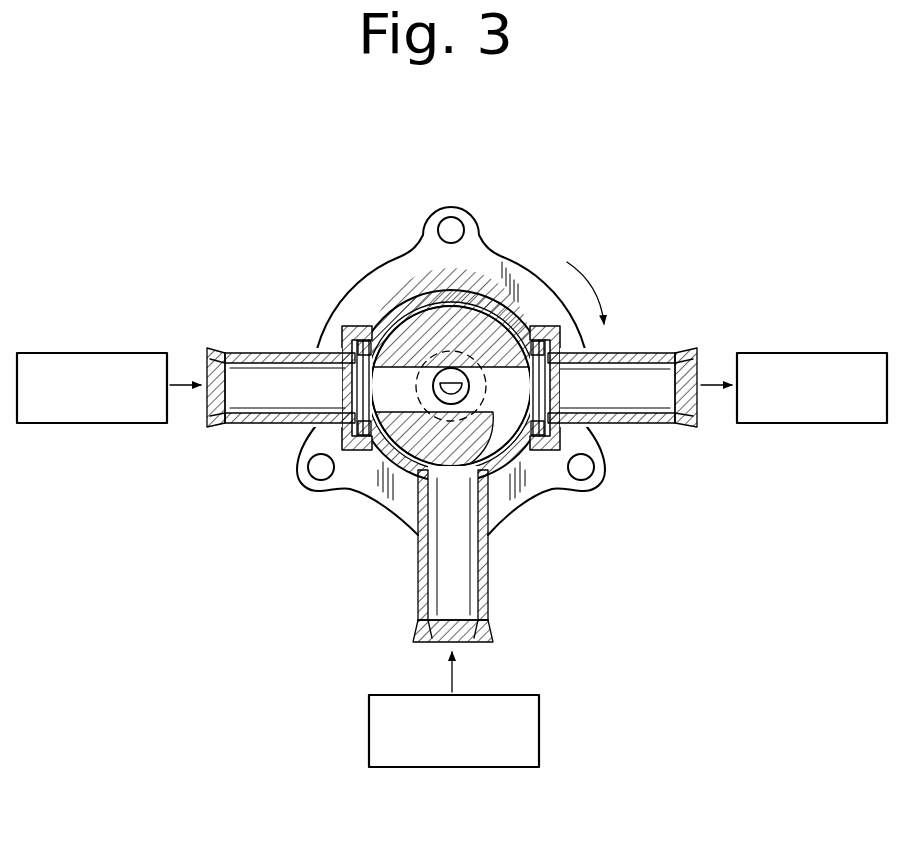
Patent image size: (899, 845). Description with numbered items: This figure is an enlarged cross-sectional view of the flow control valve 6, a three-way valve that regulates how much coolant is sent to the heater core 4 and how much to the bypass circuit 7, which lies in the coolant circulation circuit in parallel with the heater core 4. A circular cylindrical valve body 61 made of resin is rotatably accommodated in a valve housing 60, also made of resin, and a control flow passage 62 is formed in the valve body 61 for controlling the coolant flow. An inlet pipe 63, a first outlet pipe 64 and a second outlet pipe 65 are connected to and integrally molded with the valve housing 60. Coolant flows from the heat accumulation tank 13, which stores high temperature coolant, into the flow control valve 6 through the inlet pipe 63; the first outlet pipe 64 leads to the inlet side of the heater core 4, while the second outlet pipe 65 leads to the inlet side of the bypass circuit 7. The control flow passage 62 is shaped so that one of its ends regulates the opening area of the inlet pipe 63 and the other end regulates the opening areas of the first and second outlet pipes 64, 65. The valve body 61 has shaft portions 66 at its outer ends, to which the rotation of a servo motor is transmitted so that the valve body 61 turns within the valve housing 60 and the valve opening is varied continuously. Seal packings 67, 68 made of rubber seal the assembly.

The heater core 4 is at (812, 424).
The flow control valve 6 is at (368, 524).
The bypass circuit 7 is at (540, 728).
The heat accumulation tank 13 is at (143, 353).
The valve housing 60 is at (357, 490).
The circular cylindrical valve body 61 is at (467, 306).
The control flow passage 62 is at (382, 336).
The inlet pipe 63 is at (256, 373).
The first outlet pipe 64 is at (628, 393).
The second outlet pipe 65 is at (436, 570).
The shaft portions 66 is at (434, 374).
The seal packing 67 is at (346, 326).
The seal packing 68 is at (546, 325).